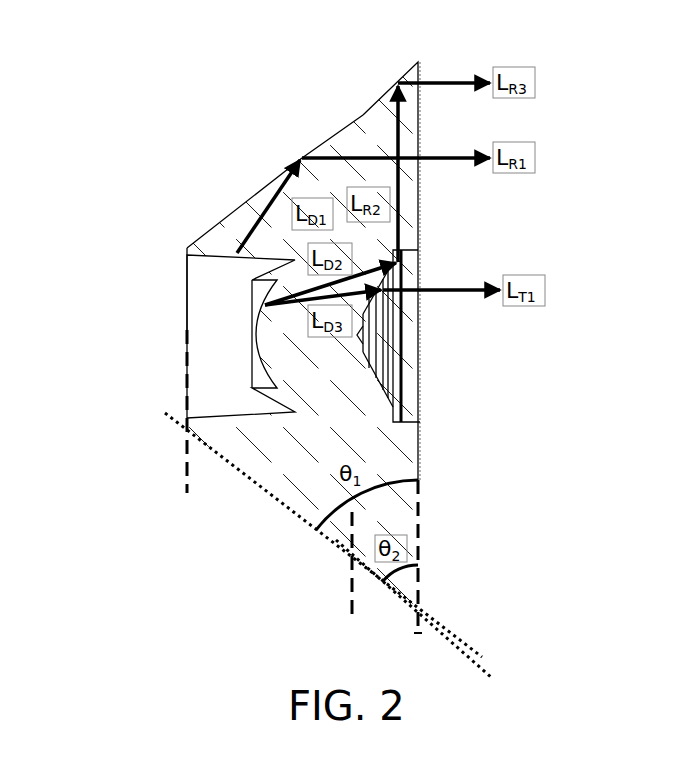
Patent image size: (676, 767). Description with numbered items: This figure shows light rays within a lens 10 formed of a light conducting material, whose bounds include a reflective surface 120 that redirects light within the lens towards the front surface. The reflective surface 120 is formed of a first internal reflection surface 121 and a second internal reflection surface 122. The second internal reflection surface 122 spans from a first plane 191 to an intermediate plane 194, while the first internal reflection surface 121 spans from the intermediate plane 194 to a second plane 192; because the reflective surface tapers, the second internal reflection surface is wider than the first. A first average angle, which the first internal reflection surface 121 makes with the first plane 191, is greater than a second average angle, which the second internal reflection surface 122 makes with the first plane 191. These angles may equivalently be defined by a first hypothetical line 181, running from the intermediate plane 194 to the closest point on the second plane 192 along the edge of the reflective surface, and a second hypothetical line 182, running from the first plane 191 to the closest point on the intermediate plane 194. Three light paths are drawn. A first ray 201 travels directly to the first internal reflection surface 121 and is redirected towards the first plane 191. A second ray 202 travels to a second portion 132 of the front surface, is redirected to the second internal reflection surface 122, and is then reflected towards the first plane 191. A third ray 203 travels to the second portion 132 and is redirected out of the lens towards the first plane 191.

The lens 10 is at (103, 107).
The reflective surface 120 is at (215, 85).
The first internal reflection surface 121 is at (238, 192).
The second internal reflection surface 122 is at (374, 100).
The second portion of the front surface 132 is at (408, 413).
The first hypothetical line 181 is at (185, 424).
The second hypothetical line 182 is at (470, 643).
The first plane 191 is at (418, 628).
The second plane 192 is at (187, 488).
The intermediate plane 194 is at (350, 597).
The first ray 201 is at (478, 150).
The second ray 202 is at (468, 72).
The third ray 203 is at (481, 282).